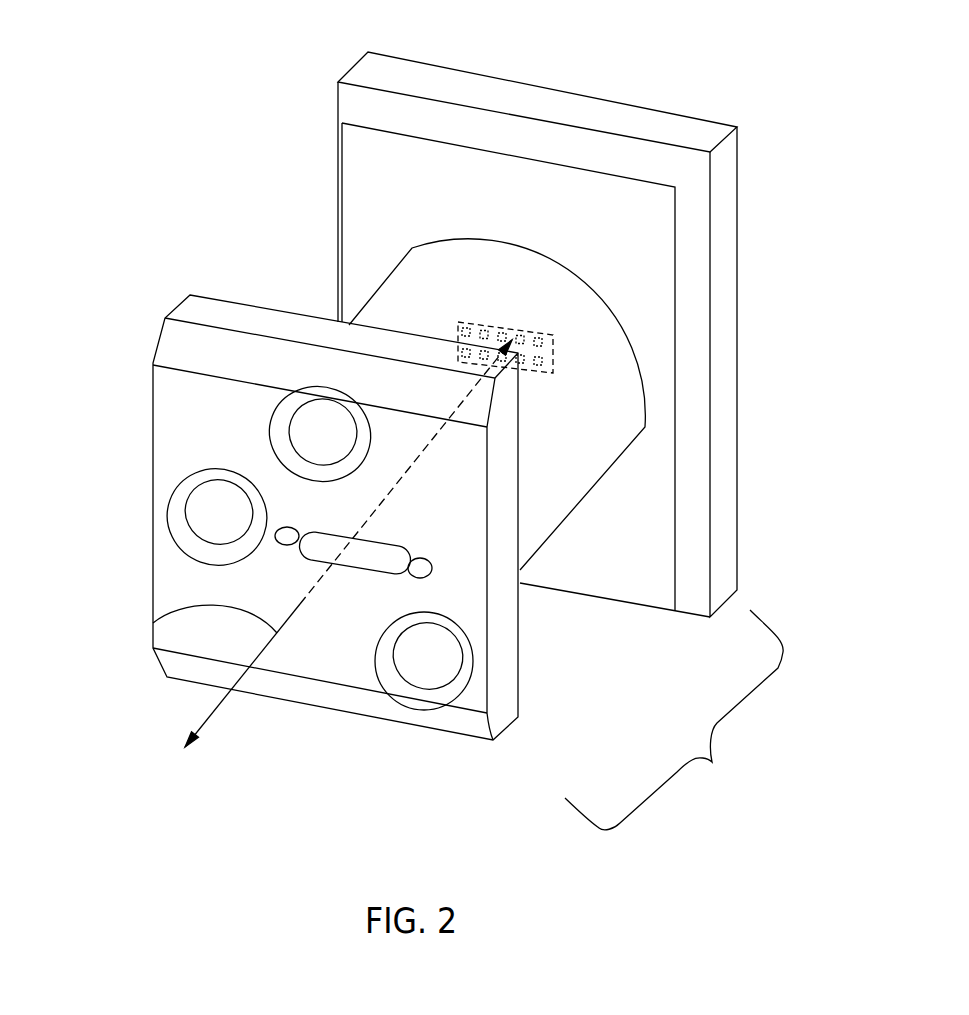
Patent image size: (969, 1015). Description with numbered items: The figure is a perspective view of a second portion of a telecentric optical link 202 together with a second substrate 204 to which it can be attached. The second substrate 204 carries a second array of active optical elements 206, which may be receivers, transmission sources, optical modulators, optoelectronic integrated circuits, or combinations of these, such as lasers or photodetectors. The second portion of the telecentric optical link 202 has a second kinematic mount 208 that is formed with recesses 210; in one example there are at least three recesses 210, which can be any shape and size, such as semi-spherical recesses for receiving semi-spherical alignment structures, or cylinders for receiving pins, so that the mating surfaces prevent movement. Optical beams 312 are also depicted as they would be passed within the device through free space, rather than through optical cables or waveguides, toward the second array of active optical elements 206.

The second portion of a telecentric optical link 202 is at (674, 720).
The second substrate 204 is at (373, 68).
The second array of active optical elements 206 is at (520, 337).
The second kinematic mount 208 is at (175, 343).
The recesses 210 is at (268, 422).
The optical beams 312 is at (153, 623).